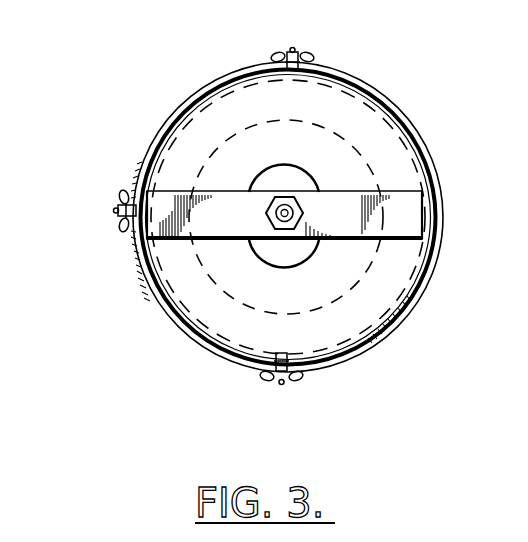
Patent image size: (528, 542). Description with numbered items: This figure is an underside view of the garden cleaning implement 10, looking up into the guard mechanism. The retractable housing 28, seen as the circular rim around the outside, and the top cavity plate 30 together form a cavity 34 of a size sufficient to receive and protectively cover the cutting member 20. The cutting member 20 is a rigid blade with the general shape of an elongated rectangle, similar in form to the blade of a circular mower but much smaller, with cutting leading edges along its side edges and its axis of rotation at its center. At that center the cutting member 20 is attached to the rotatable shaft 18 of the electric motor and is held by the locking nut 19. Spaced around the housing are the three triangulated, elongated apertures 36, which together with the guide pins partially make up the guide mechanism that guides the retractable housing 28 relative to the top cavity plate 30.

The garden cleaning implement 10 is at (230, 55).
The rotatable shaft 18 is at (285, 232).
The locking nut 19 is at (262, 230).
The cutting member 20 is at (410, 213).
The retractable housing 28 is at (160, 133).
The top cavity plate 30 is at (373, 137).
The cavity 34 is at (291, 164).
The elongated apertures 36 is at (312, 56).